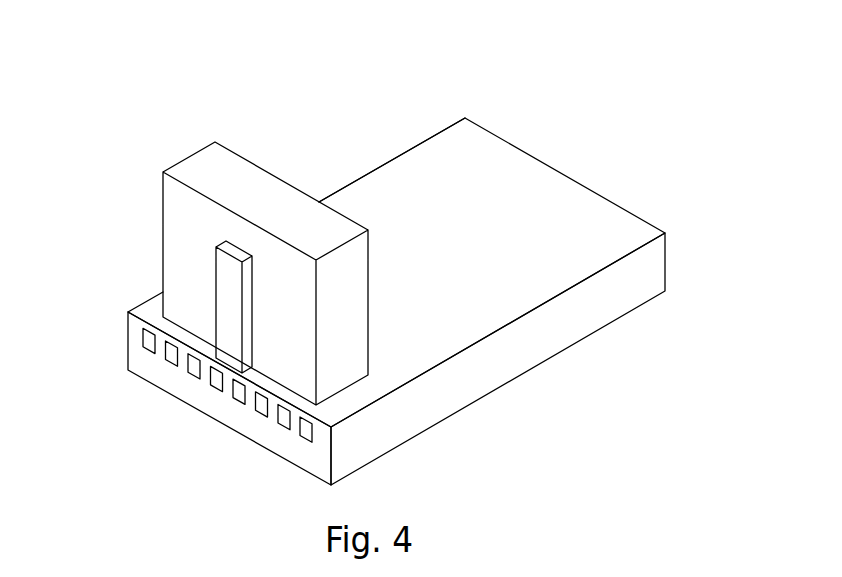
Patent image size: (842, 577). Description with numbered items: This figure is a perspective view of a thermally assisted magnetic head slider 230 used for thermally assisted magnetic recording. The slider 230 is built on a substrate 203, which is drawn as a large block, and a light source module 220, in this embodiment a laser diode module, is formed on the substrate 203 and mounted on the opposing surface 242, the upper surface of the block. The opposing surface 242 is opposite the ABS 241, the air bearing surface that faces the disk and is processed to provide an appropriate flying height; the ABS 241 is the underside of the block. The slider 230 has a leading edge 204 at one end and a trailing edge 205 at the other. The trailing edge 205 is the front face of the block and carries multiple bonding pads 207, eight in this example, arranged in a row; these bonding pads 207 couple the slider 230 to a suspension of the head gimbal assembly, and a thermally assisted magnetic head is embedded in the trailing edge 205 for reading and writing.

The thermally assisted magnetic head slider 230 is at (194, 48).
The leading edge 204 is at (414, 298).
The opposing surface 242 is at (492, 165).
The substrate 203 is at (409, 181).
The trailing edge 205 is at (207, 417).
The bonding pads 207 is at (305, 427).
The ABS 241 is at (535, 367).
The light source module 220 is at (173, 218).